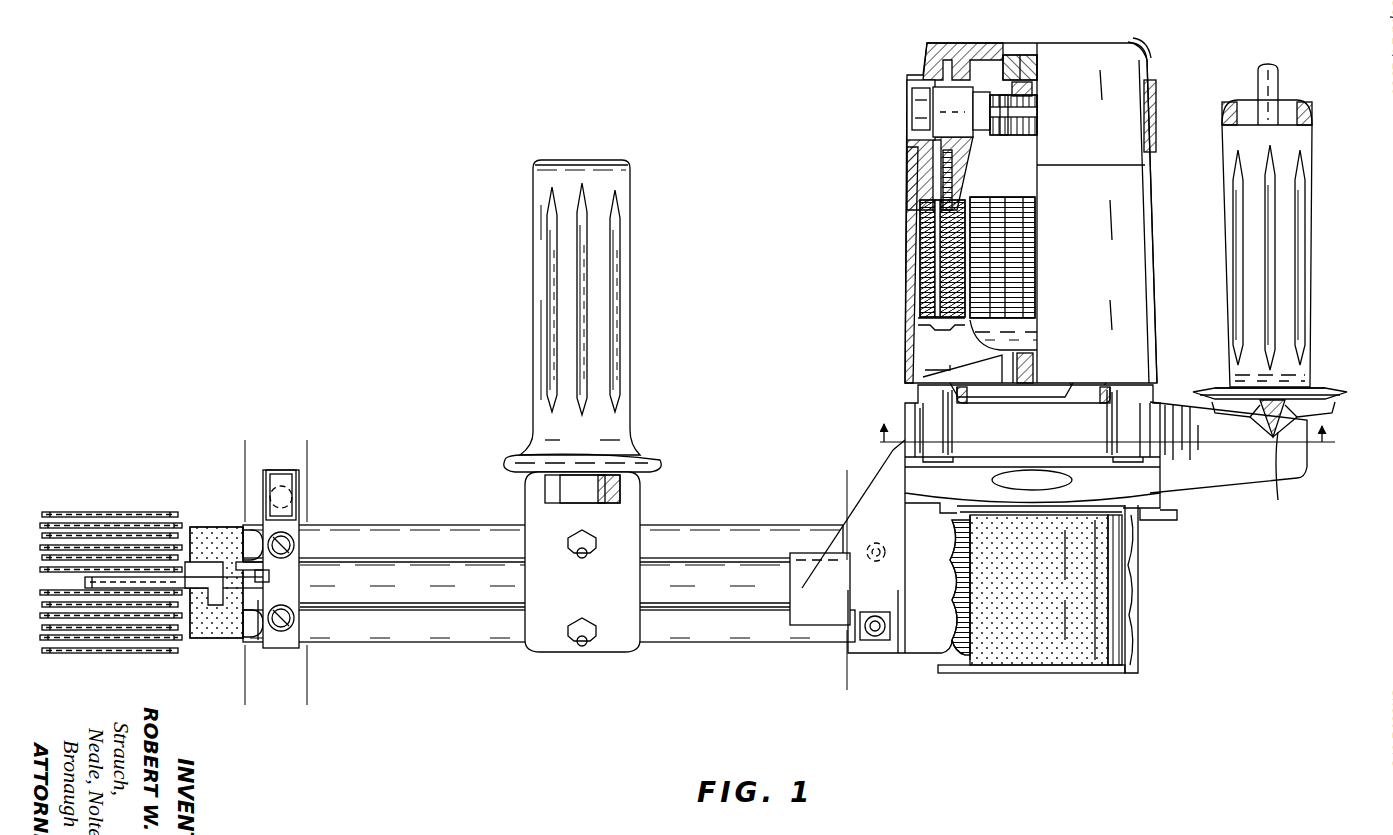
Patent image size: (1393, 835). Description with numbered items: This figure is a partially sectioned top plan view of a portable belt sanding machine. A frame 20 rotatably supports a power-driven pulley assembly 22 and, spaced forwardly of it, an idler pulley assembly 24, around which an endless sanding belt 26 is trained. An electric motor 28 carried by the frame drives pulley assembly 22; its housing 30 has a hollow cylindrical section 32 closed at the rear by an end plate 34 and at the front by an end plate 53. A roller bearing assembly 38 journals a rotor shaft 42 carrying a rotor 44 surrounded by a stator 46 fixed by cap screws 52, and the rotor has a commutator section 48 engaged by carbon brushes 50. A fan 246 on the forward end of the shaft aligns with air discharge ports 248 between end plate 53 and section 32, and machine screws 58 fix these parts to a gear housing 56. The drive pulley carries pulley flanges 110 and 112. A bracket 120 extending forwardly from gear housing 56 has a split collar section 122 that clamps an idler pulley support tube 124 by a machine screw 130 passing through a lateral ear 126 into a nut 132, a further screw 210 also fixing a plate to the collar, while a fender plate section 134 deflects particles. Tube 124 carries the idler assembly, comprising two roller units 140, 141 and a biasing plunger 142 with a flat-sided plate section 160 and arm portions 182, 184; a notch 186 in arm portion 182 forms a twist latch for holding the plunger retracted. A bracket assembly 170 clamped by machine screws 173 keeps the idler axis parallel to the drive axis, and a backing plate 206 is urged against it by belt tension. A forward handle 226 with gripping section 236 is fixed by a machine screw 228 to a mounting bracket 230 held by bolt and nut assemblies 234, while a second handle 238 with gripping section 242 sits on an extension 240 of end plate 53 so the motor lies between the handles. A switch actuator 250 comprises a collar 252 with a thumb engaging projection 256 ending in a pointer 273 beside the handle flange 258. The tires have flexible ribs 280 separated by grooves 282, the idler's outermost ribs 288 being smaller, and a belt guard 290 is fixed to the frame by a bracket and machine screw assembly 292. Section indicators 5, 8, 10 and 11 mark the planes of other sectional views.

The section line 5- 5 is at (1098, 446).
The section line 8- 8 is at (262, 448).
The section line 10- 10 is at (282, 448).
The section line 11- 11 is at (862, 487).
The frame 20 is at (712, 560).
The power-driven pulley assembly 22 is at (1044, 591).
The idler pulley assembly 24 is at (148, 585).
The sanding belt 26 is at (950, 635).
The electric motor 28 is at (1034, 215).
The housing 30 is at (907, 180).
The cylindrical section 32 is at (1157, 250).
The end plate 34 is at (1140, 47).
The roller bearing assembly 38 is at (1015, 68).
The rotor shaft 42 is at (1032, 89).
The rotor 44 is at (1030, 283).
The stator 46 is at (925, 265).
The commutator section 48 is at (1018, 114).
The carbon brushes 50 is at (988, 118).
The cap screws 52 is at (920, 325).
The end plate 53 is at (1061, 446).
The gear housing 56 is at (912, 458).
The machine screws 58 is at (950, 460).
The pulley flange 110 is at (1006, 673).
The pulley flange 112 is at (1118, 508).
The bracket 120 is at (843, 533).
The split collar section 122 is at (800, 560).
The idler pulley support tube 124 is at (545, 586).
The lateral ear 126 is at (897, 630).
The machine screw 130 is at (882, 618).
The nut 132 is at (875, 614).
The fender plate section 134 is at (975, 565).
The roller unit 140 is at (109, 514).
The roller unit 141 is at (176, 658).
The biasing plunger 142 is at (198, 562).
The plate section 160 is at (227, 578).
The bracket assembly 170 is at (300, 548).
The machine screws 173 is at (290, 536).
The arm portion 182 is at (268, 573).
The arm portion 184 is at (255, 612).
The notch 186 is at (240, 565).
The backing plate 206 is at (670, 645).
The screw 210 is at (872, 546).
The forward tool manipulating handle 226 is at (571, 316).
The machine screw 228 is at (575, 498).
The mounting bracket 230 is at (607, 562).
The bolt and nut assemblies 234 is at (592, 550).
The gripping section 236 is at (538, 272).
The second tool manipulating handle 238 is at (1232, 308).
The extension 240 is at (1271, 293).
The gripping section 242 is at (1243, 225).
The fan 246 is at (980, 370).
The air discharge ports 248 is at (1090, 395).
The switch actuator 250 is at (1228, 418).
The collar 252 is at (1322, 409).
The thumb engaging projection 256 is at (1300, 390).
The flange 258 is at (1340, 392).
The pointer 273 is at (1290, 477).
The flexible ribs 280 is at (40, 525).
The grooves 282 is at (40, 512).
The outermost tire ribs 288 is at (60, 528).
The belt guard 290 is at (1138, 590).
The bracket and machine screw assembly 292 is at (283, 470).